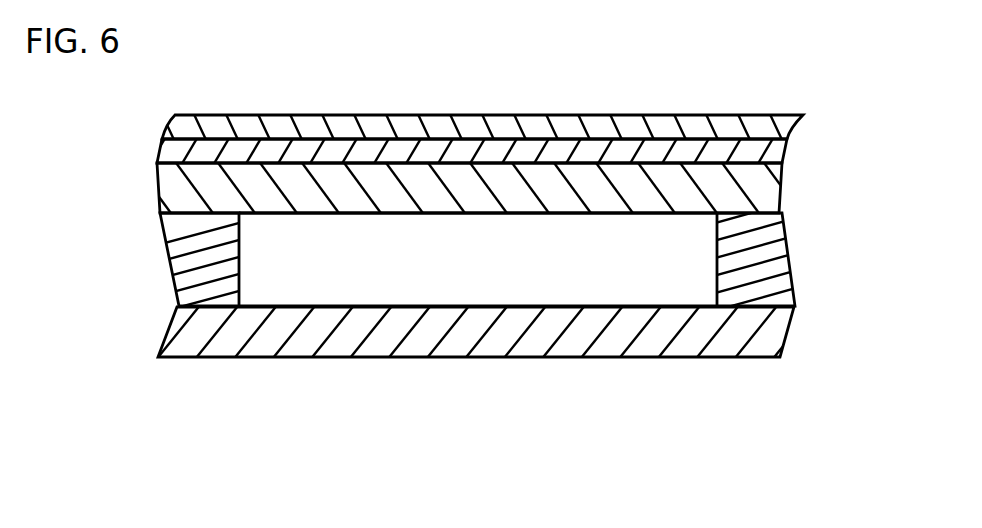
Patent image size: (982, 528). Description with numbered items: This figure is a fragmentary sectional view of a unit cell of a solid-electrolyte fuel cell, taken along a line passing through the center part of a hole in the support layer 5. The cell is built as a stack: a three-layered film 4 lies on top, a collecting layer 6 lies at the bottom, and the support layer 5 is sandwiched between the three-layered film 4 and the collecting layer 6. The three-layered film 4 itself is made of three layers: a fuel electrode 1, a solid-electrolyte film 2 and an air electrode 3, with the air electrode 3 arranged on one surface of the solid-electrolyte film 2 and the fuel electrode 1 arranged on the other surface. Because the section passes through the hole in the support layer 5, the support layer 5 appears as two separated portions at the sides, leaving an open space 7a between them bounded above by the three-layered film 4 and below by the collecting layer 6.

The fuel electrode 1 is at (783, 126).
The solid-electrolyte film 2 is at (777, 152).
The air electrode 3 is at (483, 188).
The three-layered film 4 is at (514, 164).
The support layer 5 is at (192, 233).
The collecting layer 6 is at (775, 337).
The gap 7a is at (508, 255).